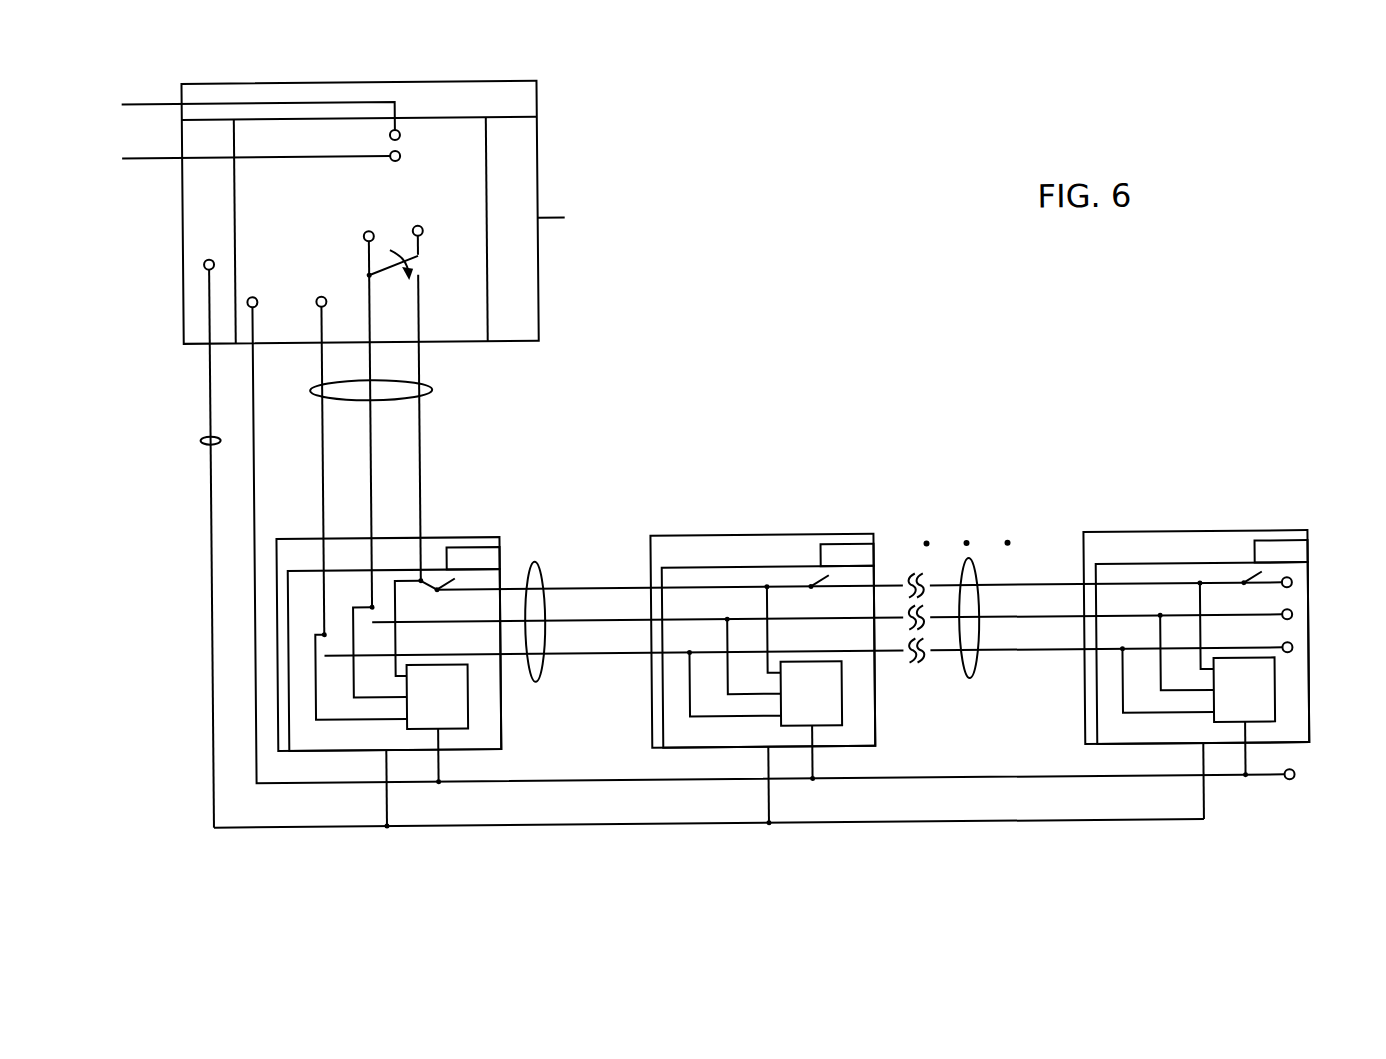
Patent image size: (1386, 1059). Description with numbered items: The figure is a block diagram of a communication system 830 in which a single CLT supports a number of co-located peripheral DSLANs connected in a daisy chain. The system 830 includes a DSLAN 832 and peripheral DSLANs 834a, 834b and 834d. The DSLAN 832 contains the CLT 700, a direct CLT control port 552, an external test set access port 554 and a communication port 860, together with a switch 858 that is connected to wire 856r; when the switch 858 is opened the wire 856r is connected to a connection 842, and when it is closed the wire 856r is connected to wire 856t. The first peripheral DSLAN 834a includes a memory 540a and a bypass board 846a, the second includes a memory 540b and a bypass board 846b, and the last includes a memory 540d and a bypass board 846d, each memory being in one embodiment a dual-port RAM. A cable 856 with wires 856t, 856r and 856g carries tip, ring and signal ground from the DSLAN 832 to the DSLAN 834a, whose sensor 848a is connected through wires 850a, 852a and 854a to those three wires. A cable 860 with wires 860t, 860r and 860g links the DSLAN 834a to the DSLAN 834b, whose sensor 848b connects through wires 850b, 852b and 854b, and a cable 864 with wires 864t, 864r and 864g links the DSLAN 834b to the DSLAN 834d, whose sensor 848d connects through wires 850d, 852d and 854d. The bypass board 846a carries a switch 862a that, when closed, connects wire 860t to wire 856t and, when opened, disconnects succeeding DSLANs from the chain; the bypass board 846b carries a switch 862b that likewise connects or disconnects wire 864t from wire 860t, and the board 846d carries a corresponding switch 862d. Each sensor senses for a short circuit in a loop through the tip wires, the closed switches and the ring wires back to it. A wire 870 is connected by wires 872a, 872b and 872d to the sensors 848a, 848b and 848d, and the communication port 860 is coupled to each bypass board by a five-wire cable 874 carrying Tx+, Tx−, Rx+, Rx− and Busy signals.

The communication system 830 is at (212, 852).
The DSLAN 832 is at (396, 82).
The CLT 700 is at (496, 170).
The direct CLT control port 552 is at (404, 131).
The external test set access port 554 is at (404, 156).
The connection 842 is at (419, 227).
The switch 858 is at (397, 279).
The cable 860 is at (207, 263).
The cable 874 is at (210, 392).
The wire 870 is at (256, 392).
The cable 856 is at (374, 454).
The wire 856g is at (324, 443).
The wire 856r is at (373, 442).
The wire 856t is at (422, 442).
The wire 860t is at (557, 590).
The wire 860r is at (557, 622).
The wire 860g is at (557, 655).
The cable 864 is at (970, 685).
The wire 864t is at (992, 585).
The wire 864r is at (992, 617).
The wire 864g is at (992, 649).
The peripheral DSLAN 834a is at (432, 537).
The peripheral DSLAN 834b is at (805, 537).
The peripheral DSLAN 834d is at (1239, 538).
The memory 540a is at (470, 548).
The memory 540b is at (841, 547).
The memory 540d is at (1279, 548).
The bypass board 846a is at (500, 690).
The bypass board 846b is at (874, 674).
The bypass board 846d is at (1308, 714).
The switch 862a is at (450, 591).
The switch 862b is at (822, 591).
The module switch 862d is at (1256, 591).
The wire 850a is at (400, 647).
The wire 850b is at (770, 647).
The wire 850d is at (1203, 647).
The wire 852a is at (351, 684).
The wire 852b is at (726, 683).
The wire 852d is at (1158, 684).
The wire 854a is at (322, 721).
The wire 854b is at (700, 723).
The wire 854d is at (1135, 718).
The sensor 848a is at (463, 709).
The sensor 848b is at (837, 709).
The sensor 848d is at (1271, 709).
The wire 872a is at (440, 770).
The wire 872b is at (812, 773).
The wire 872d is at (1252, 762).